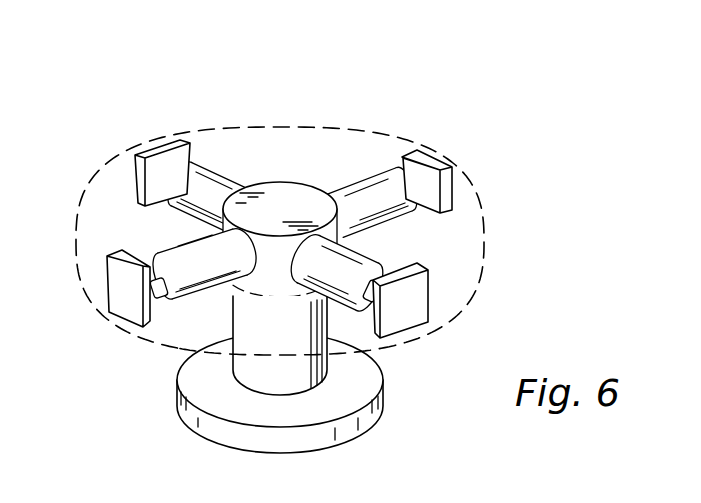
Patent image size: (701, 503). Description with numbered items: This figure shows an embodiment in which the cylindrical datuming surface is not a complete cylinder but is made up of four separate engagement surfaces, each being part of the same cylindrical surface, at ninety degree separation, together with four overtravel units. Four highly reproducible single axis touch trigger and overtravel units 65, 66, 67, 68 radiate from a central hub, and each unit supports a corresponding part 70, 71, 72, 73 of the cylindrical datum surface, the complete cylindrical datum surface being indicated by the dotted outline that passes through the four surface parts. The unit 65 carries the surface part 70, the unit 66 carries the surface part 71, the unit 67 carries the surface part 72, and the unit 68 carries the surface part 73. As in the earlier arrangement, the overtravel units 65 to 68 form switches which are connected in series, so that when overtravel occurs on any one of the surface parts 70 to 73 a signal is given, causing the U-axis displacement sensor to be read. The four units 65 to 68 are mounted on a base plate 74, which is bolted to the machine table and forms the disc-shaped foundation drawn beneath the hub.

The single axis touch trigger and overtravel unit 65 is at (192, 284).
The single axis touch trigger and overtravel unit 66 is at (207, 177).
The single axis touch trigger and overtravel unit 67 is at (377, 183).
The single axis touch trigger and overtravel unit 68 is at (364, 256).
The part of cylindrical datum surface 70 is at (120, 287).
The part of cylindrical datum surface 71 is at (168, 144).
The part of cylindrical datum surface 72 is at (443, 160).
The part of cylindrical datum surface 73 is at (400, 312).
The base plate 74 is at (215, 390).